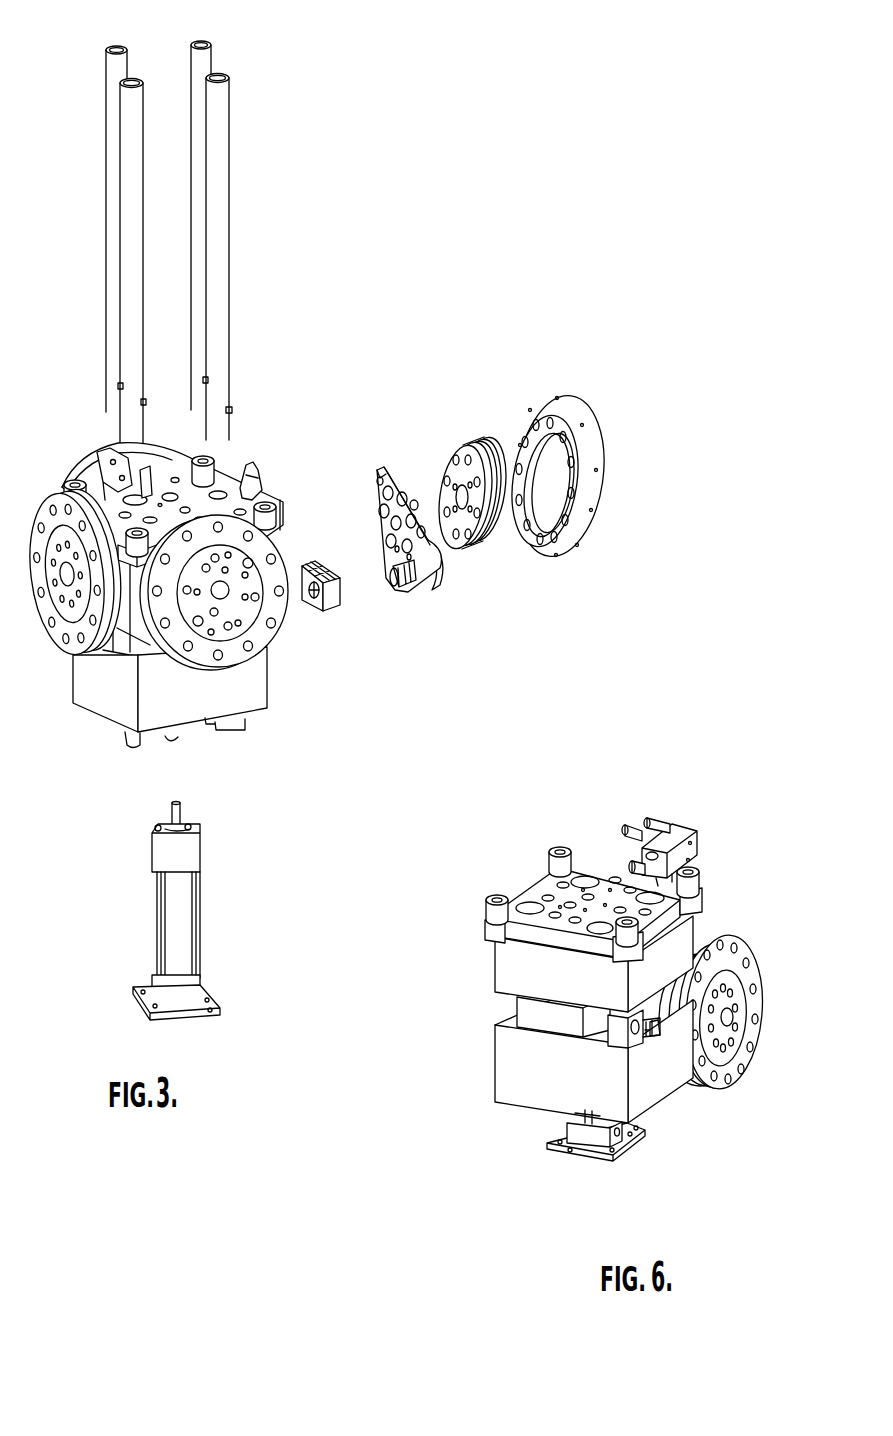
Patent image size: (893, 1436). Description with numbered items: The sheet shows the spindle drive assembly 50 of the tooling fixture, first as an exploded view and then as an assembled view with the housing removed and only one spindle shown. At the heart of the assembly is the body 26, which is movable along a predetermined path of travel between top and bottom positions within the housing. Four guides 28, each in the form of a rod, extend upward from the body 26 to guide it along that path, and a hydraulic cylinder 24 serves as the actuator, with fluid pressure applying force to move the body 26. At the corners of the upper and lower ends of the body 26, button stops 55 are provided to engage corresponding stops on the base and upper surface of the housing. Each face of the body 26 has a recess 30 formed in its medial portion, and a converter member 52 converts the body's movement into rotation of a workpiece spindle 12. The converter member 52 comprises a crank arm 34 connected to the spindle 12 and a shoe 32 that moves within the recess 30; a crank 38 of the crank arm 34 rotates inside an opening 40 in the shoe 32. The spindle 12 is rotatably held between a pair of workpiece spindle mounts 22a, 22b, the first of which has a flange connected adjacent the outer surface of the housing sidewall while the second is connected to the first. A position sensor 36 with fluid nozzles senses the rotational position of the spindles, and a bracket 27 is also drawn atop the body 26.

In FIG. 3, the workpiece spindle 12 is at (478, 442).
In FIG. 6, the workpiece spindle 12 is at (745, 986).
In FIG. 6, the first workpiece spindle mount 22a is at (700, 948).
In FIG. 3, the second workpiece spindle mount 22b is at (558, 558).
In FIG. 6, the second workpiece spindle mount 22b is at (742, 950).
In FIG. 3, the hydraulic cylinder 24 is at (141, 1006).
In FIG. 6, the hydraulic cylinder 24 is at (570, 1157).
In FIG. 3, the body 26 is at (150, 697).
In FIG. 6, the body 26 is at (495, 1090).
In FIG. 3, the mounting bracket 27 is at (147, 490).
In FIG. 3, the guide 28 is at (221, 265).
In FIG. 6, the recess 30 is at (620, 996).
In FIG. 3, the shoe 32 is at (314, 636).
In FIG. 6, the shoe 32 is at (622, 1050).
In FIG. 3, the crank arm 34 is at (436, 588).
In FIG. 6, the crank arm 34 is at (668, 1085).
In FIG. 3, the position sensor 36 is at (247, 470).
In FIG. 6, the position sensor 36 is at (678, 830).
In FIG. 3, the crank 38 is at (393, 582).
In FIG. 3, the opening 40 is at (312, 600).
In FIG. 3, the spindle drive assembly 50 is at (229, 418).
In FIG. 3, the converter member 52 is at (382, 579).
In FIG. 3, the button stop 55 is at (128, 735).
In FIG. 6, the button stop 55 is at (558, 852).